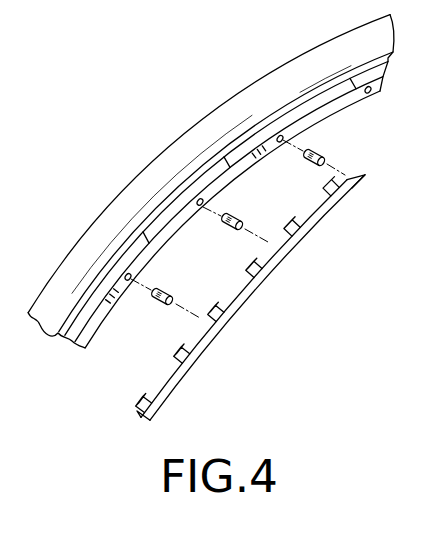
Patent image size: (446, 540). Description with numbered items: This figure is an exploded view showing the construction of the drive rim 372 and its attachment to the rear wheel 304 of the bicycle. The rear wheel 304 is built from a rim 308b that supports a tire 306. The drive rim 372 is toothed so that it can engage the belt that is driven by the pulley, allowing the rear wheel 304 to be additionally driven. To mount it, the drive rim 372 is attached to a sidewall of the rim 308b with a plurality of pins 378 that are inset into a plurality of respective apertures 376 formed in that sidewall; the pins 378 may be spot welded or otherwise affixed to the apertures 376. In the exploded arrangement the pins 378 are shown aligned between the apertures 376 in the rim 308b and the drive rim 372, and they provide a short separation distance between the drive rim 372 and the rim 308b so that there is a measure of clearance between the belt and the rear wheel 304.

The rear wheel 304 is at (110, 205).
The tire 306 is at (182, 147).
The rim 308b is at (340, 108).
The drive rim 372 is at (320, 228).
The apertures 376 is at (200, 206).
The pins 378 is at (157, 303).